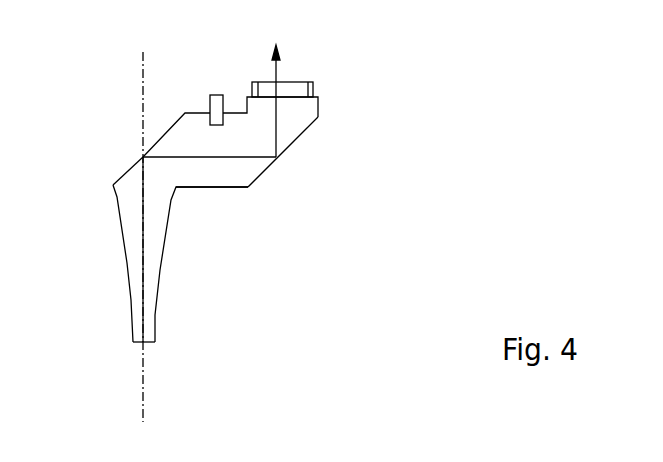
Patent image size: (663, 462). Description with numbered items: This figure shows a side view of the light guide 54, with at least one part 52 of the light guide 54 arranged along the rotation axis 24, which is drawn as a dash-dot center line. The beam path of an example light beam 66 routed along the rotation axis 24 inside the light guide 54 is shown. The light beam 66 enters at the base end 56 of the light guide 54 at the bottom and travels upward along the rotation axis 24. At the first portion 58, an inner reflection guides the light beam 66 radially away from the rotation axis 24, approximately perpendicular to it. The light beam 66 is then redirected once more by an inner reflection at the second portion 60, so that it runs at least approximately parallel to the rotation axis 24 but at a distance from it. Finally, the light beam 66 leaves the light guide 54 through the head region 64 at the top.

The rotation axis 24 is at (143, 85).
The part of the light guide 52 is at (206, 261).
The light guide 54 is at (218, 167).
The base end 56 is at (99, 359).
The first portion 58 is at (140, 157).
The second portion 60 is at (290, 143).
The head region 64 is at (297, 82).
The light beam 66 is at (143, 272).